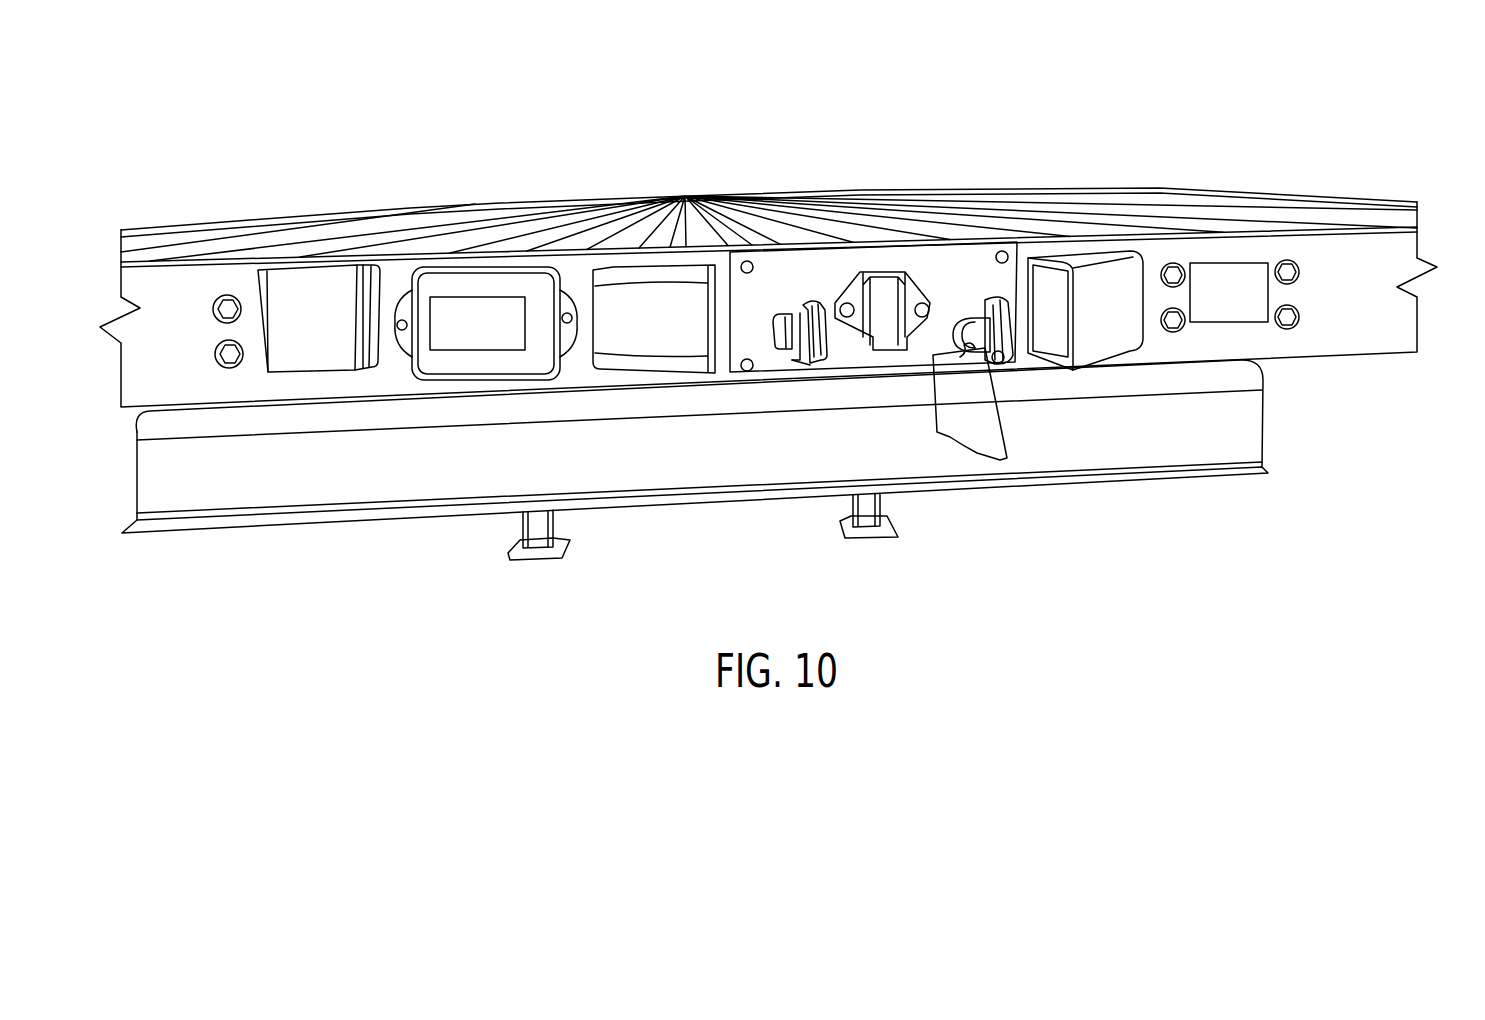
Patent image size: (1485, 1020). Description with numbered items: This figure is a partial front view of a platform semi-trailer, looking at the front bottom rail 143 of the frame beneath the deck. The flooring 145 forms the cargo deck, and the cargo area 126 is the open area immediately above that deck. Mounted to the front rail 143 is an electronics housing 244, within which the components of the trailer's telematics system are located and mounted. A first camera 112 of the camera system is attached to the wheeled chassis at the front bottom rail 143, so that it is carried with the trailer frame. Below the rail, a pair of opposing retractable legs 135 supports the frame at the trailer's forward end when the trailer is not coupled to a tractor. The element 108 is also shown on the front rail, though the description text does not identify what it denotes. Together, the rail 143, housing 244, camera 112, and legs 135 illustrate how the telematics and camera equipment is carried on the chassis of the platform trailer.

The cargo area 126 is at (690, 88).
The electronics housing 244 is at (486, 314).
The first camera 112 is at (483, 351).
The flooring 145 is at (1073, 219).
The mounting plate 108 is at (1239, 262).
The front bottom rail 143 is at (1403, 247).
The retractable legs 135 is at (555, 522).